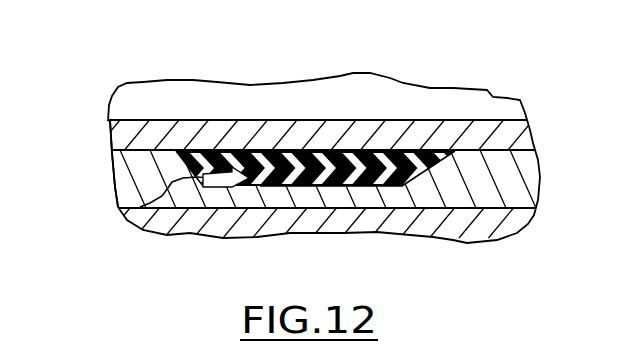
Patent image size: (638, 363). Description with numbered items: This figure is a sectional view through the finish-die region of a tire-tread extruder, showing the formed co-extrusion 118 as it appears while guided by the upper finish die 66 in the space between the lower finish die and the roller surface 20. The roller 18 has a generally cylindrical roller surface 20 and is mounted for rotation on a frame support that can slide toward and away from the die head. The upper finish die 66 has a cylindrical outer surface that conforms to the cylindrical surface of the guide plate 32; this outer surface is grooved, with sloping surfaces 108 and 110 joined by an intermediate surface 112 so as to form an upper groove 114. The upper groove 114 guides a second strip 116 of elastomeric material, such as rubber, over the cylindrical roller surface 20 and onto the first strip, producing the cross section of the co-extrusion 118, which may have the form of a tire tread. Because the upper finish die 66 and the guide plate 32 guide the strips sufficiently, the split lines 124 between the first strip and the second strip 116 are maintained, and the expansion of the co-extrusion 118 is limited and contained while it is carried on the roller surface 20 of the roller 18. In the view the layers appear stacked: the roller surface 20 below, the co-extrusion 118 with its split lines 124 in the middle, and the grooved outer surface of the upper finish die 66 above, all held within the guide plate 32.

The roller 18 is at (329, 116).
The roller surface 20 is at (89, 163).
The guide plate 32 is at (332, 239).
The upper finish die 66 is at (340, 179).
The sloping surface 108 is at (319, 118).
The sloping surface 110 is at (190, 109).
The intermediate surface 112 is at (205, 230).
The upper groove 114 is at (315, 95).
The second strip 116 is at (419, 217).
The co-extrusion 118 is at (331, 231).
The split lines 124 is at (294, 226).